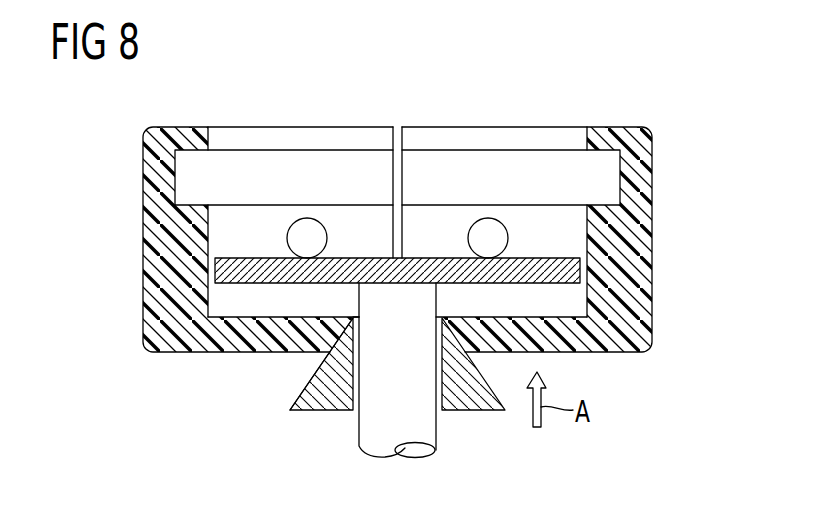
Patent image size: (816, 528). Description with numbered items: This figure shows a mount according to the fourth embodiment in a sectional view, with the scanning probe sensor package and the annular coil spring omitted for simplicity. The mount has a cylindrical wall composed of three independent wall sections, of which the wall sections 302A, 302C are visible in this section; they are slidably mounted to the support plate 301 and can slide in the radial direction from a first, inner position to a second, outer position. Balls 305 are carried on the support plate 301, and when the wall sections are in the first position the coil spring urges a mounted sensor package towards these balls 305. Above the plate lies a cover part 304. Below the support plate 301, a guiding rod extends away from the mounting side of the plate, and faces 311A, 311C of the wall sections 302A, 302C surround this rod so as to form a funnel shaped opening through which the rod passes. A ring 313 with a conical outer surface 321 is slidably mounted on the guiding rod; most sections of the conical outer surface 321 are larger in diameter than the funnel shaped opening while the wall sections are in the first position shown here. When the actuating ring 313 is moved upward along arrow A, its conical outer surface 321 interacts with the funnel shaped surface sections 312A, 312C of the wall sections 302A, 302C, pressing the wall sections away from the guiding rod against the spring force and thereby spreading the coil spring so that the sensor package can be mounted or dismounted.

The support plate 301 is at (432, 273).
The wall section 302A is at (645, 185).
The wall section 302C is at (150, 185).
The cover 304 is at (607, 162).
The balls 305 is at (300, 237).
The face 311A is at (424, 340).
The face 311C is at (364, 345).
The funnel shaped surface section 312A is at (462, 317).
The funnel shaped surface section 312C is at (333, 317).
The ring 313 is at (292, 400).
The conical outer surface 321 is at (313, 375).